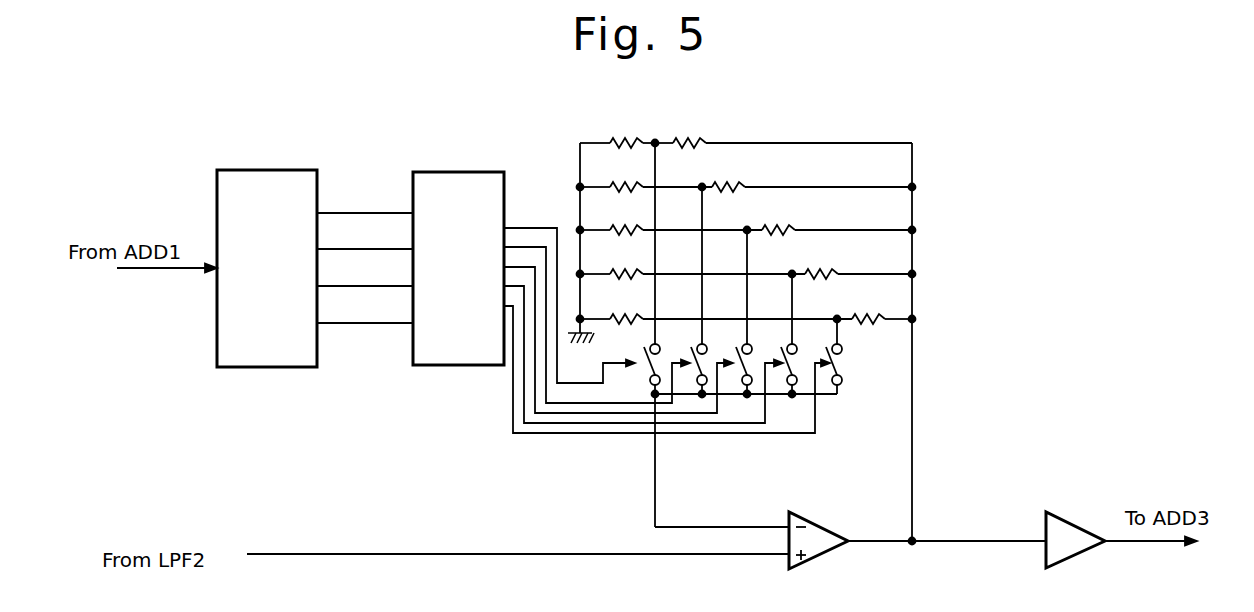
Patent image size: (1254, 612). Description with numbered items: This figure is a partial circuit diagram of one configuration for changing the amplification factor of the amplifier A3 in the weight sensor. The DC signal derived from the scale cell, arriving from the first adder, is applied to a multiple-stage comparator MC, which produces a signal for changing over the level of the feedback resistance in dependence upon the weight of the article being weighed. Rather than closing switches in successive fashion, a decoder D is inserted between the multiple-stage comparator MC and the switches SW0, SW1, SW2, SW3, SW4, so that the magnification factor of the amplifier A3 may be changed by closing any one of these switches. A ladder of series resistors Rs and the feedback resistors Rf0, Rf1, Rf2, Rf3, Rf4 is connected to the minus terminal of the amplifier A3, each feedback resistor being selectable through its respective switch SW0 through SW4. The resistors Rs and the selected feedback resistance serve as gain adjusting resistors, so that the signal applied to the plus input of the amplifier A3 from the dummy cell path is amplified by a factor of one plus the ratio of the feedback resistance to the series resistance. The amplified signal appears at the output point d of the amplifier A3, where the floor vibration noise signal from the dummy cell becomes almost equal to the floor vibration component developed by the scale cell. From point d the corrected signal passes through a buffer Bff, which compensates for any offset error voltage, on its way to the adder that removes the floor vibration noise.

The resistor Rs is at (626, 218).
The feedback resistor Rf4 is at (679, 130).
The feedback resistor Rf3 is at (722, 175).
The feedback resistor Rf2 is at (770, 218).
The feedback resistor Rf1 is at (814, 262).
The feedback resistor Rf0 is at (860, 305).
The switch SW4 is at (637, 357).
The switch SW3 is at (684, 354).
The switch SW2 is at (729, 354).
The switch SW1 is at (774, 354).
The switch SW0 is at (819, 354).
The multiple-stage comparator MC is at (233, 360).
The decoder D is at (444, 357).
The amplifier A3 is at (818, 557).
The output point d is at (911, 554).
The buffer Bff is at (1075, 557).